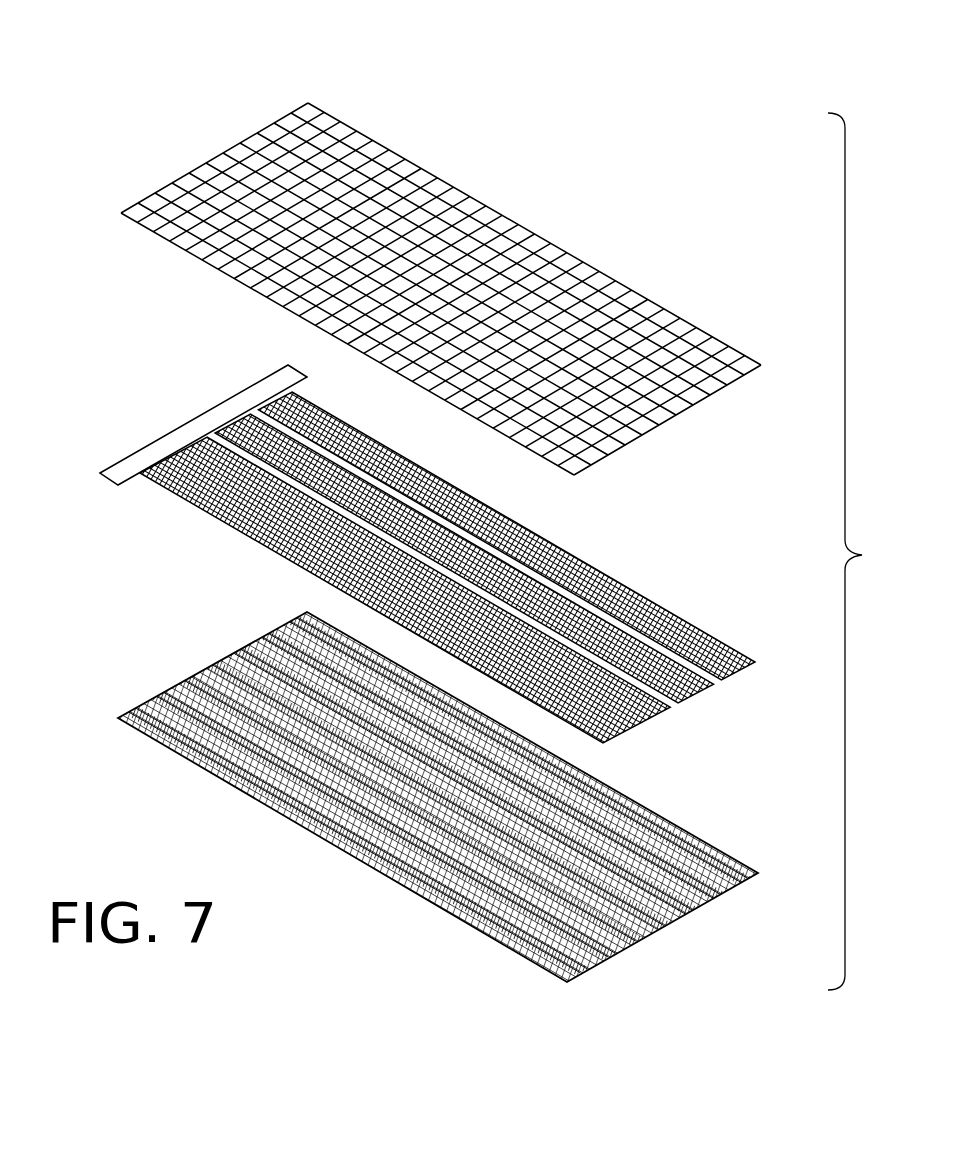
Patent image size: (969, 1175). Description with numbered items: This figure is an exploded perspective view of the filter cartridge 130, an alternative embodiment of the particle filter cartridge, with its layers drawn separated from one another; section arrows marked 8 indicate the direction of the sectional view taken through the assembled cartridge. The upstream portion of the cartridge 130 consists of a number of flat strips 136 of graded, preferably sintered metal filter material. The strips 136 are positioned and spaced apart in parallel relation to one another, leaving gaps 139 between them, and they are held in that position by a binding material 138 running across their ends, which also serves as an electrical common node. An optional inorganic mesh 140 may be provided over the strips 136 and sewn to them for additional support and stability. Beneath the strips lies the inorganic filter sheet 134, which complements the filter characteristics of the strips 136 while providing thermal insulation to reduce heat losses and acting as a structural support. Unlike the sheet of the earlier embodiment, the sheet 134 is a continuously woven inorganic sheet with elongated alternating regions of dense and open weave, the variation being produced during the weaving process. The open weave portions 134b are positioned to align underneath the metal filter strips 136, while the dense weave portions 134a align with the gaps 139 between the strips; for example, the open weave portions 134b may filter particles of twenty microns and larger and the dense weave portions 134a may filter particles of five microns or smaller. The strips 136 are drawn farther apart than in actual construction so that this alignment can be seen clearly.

The filter cartridge 130 is at (552, 82).
The inorganic mesh 140 is at (248, 160).
The binding material 138 is at (220, 420).
The flat strips 136 is at (560, 595).
The gaps 139 is at (680, 703).
The inorganic filter sheet 134 is at (438, 821).
The dense weave portions 134a is at (628, 952).
The open weave portions 134b is at (685, 917).
The section line for FIG. 8 is at (670, 240).